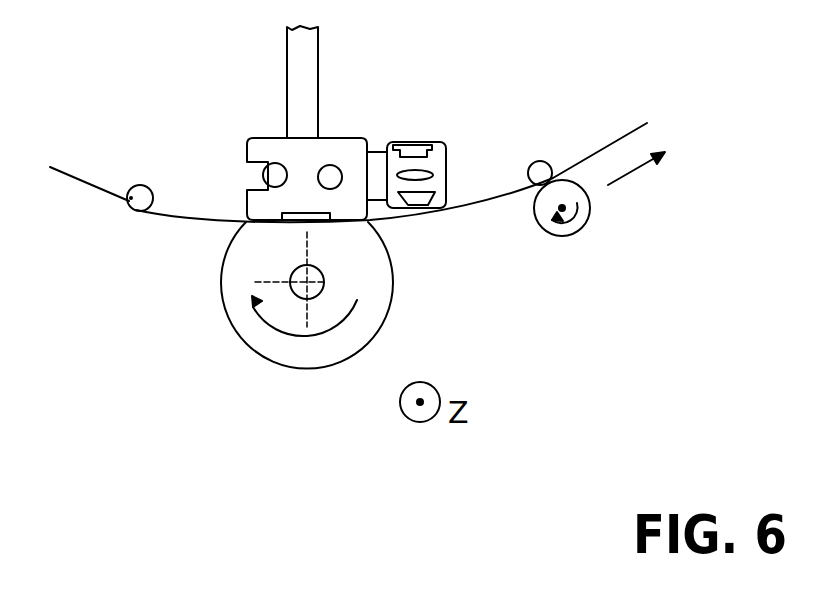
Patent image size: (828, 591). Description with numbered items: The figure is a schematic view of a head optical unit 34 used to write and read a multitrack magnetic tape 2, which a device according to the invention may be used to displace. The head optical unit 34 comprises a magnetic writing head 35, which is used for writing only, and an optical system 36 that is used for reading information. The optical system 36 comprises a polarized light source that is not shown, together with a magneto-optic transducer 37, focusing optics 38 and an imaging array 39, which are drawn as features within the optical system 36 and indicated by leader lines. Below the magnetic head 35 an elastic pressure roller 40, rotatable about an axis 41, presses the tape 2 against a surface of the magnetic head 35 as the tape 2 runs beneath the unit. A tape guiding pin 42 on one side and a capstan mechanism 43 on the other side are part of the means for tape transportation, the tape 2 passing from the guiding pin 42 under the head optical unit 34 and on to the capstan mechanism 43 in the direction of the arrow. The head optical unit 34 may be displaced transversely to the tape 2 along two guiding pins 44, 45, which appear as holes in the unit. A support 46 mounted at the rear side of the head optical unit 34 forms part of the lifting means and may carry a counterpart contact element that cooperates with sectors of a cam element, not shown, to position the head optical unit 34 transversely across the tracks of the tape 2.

The tape 2 is at (187, 219).
The head optical unit 34 is at (276, 152).
The magnetic writing head 35 is at (302, 217).
The optical system 36 is at (388, 142).
The magneto-optic transducer 37 is at (417, 205).
The focusing optics 38 is at (427, 177).
The imaging array 39 is at (427, 148).
The elastic pressure roller 40 is at (242, 292).
The axis 41 is at (318, 287).
The tape guiding pin 42 is at (131, 188).
The capstan mechanism 43 is at (562, 187).
The guiding pin 44 is at (270, 180).
The guiding pin 45 is at (336, 172).
The support 46 is at (302, 63).